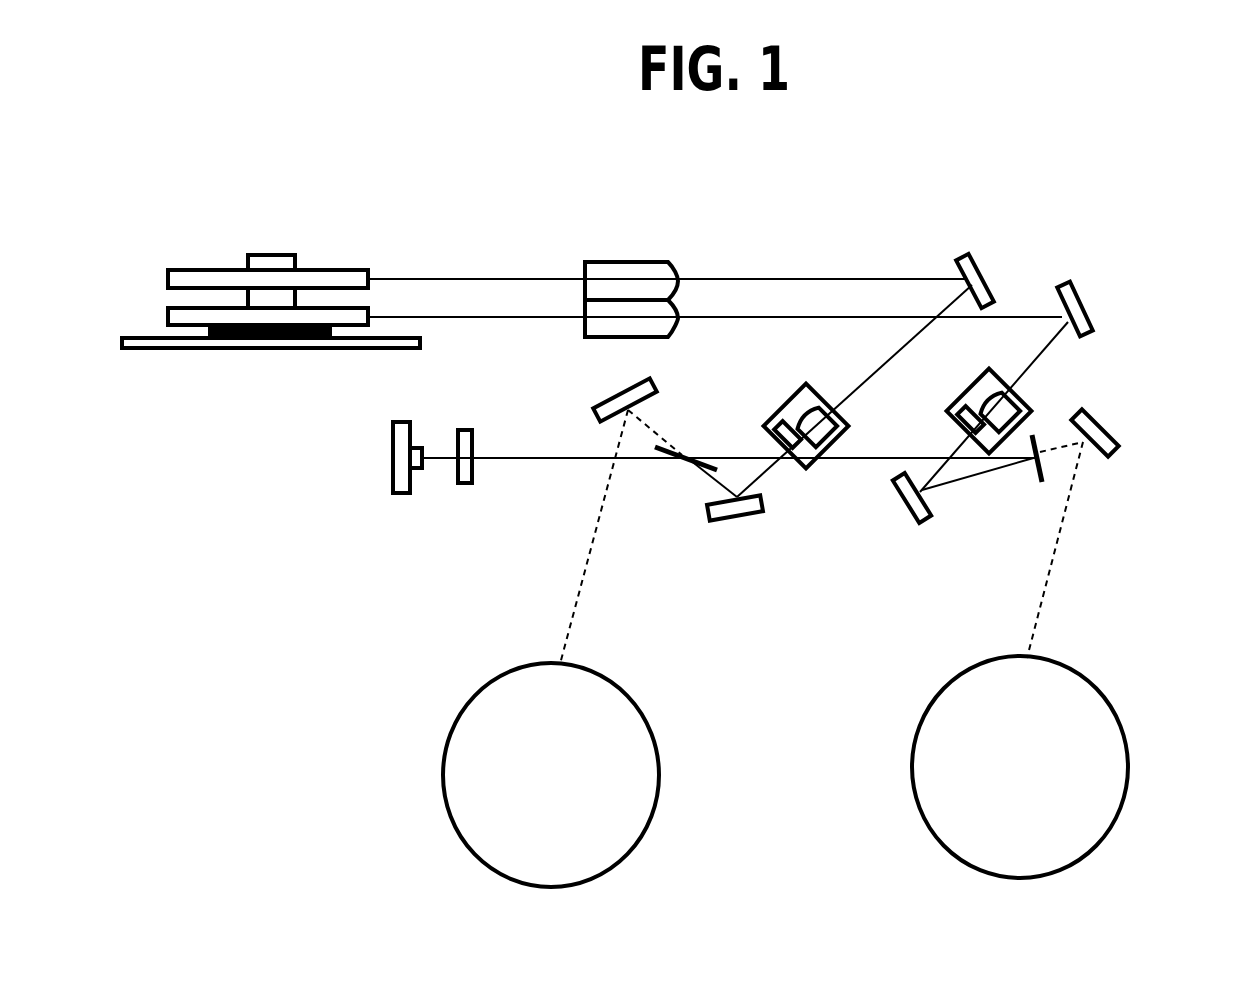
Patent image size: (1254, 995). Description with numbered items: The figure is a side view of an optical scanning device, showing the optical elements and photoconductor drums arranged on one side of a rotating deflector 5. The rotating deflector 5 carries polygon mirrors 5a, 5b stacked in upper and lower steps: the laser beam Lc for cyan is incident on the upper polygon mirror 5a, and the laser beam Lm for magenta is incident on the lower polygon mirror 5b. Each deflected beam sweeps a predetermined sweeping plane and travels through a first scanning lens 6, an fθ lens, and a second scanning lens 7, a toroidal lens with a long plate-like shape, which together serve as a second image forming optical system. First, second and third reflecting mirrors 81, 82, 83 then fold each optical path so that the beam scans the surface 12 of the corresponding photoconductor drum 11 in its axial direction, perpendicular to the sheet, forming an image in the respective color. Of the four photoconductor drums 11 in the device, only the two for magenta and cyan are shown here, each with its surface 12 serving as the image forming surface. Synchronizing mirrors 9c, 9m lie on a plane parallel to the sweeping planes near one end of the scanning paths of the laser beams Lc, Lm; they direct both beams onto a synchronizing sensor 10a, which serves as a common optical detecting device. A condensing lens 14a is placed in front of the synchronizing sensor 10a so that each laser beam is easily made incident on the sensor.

The rotating deflector 5 is at (298, 233).
The polygon mirror 5a is at (212, 270).
The polygon mirror 5b is at (168, 318).
The first scanning lens 6 is at (628, 262).
The second scanning lens 7 is at (791, 401).
The first reflecting mirror 81 is at (990, 266).
The second reflecting mirror 82 is at (725, 516).
The third reflecting mirror 83 is at (615, 391).
The synchronizing mirror 9c is at (662, 458).
The synchronizing mirror 9m is at (1037, 470).
The synchronizing sensor 10a is at (393, 455).
The condensing lens 14a is at (465, 485).
The photoconductor drum 11 is at (684, 812).
The surface 12 is at (630, 700).
The laser beam Lc is at (482, 279).
The laser beam Lm is at (481, 320).